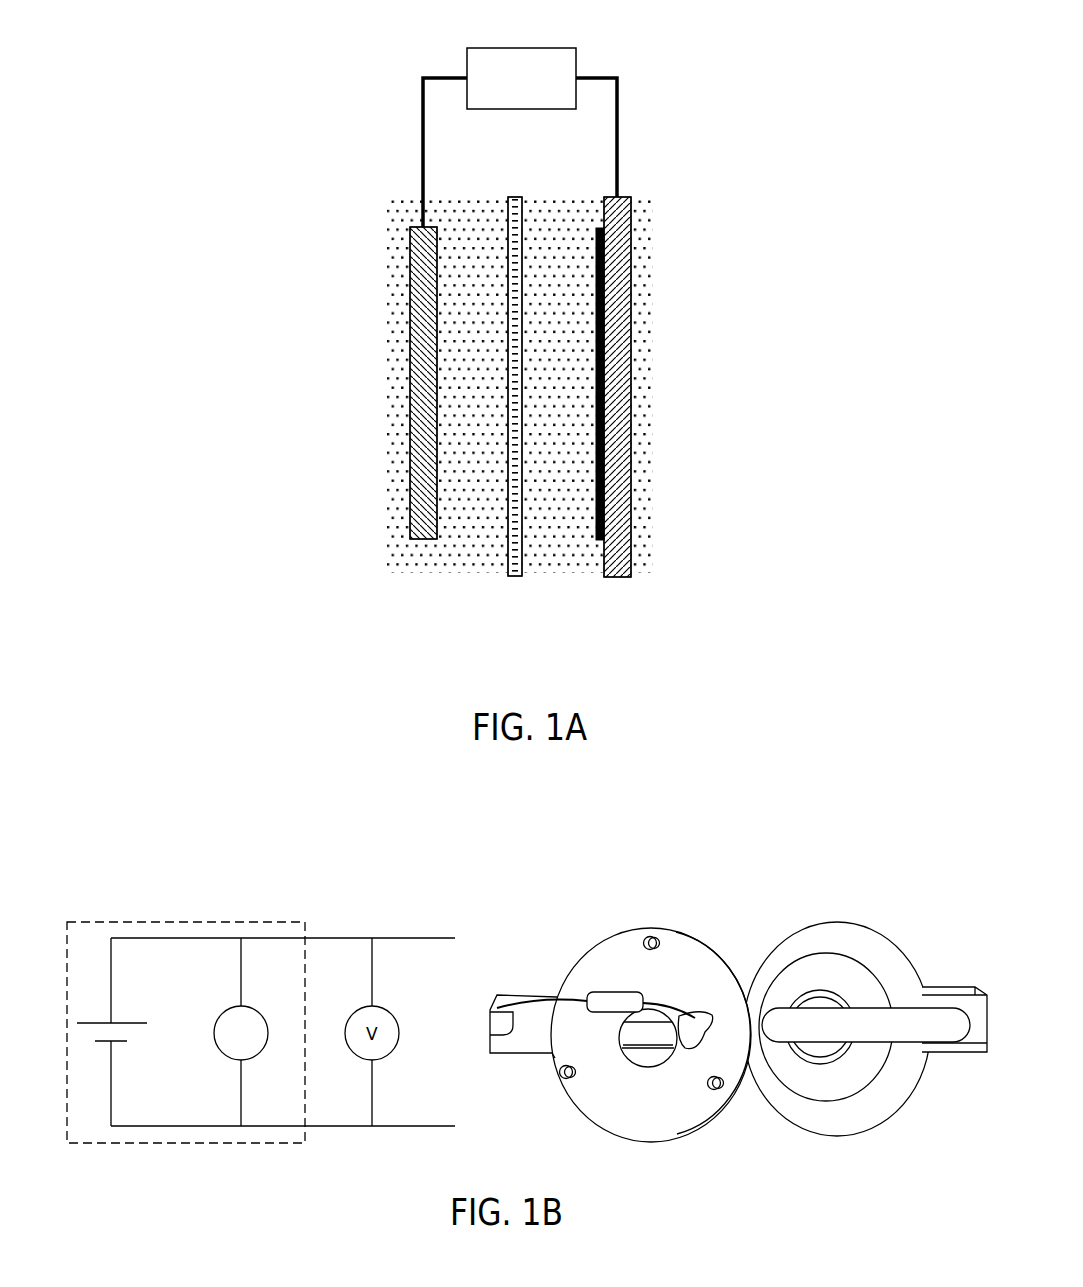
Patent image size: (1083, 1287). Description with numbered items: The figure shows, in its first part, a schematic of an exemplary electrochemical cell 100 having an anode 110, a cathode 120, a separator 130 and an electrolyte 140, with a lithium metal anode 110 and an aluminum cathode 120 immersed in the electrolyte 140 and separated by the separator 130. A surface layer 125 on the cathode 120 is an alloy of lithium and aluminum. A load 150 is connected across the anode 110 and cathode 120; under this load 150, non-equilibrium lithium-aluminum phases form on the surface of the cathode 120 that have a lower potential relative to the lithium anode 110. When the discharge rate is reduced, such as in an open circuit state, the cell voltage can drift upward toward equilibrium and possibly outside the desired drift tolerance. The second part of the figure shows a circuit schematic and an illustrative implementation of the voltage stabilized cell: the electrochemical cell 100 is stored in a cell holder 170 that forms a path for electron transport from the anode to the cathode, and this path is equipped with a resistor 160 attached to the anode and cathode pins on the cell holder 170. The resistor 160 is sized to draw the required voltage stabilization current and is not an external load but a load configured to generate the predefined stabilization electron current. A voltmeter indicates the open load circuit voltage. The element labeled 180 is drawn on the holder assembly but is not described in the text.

In FIG. 1A, the electrochemical cell 100 is at (690, 154).
In FIG. 1B, the electrochemical cell 100 is at (140, 1000).
In FIG. 1A, the anode 110 is at (410, 253).
In FIG. 1A, the cathode 120 is at (631, 225).
In FIG. 1A, the surface layer 125 is at (600, 542).
In FIG. 1A, the separator 130 is at (514, 578).
In FIG. 1A, the electrolyte 140 is at (450, 581).
In FIG. 1A, the load 150 is at (524, 48).
In FIG. 1B, the resistor 160 is at (260, 993).
In FIG. 1B, the cell holder 170 is at (755, 921).
In FIG. 1B, the test cell housing 180 is at (861, 895).